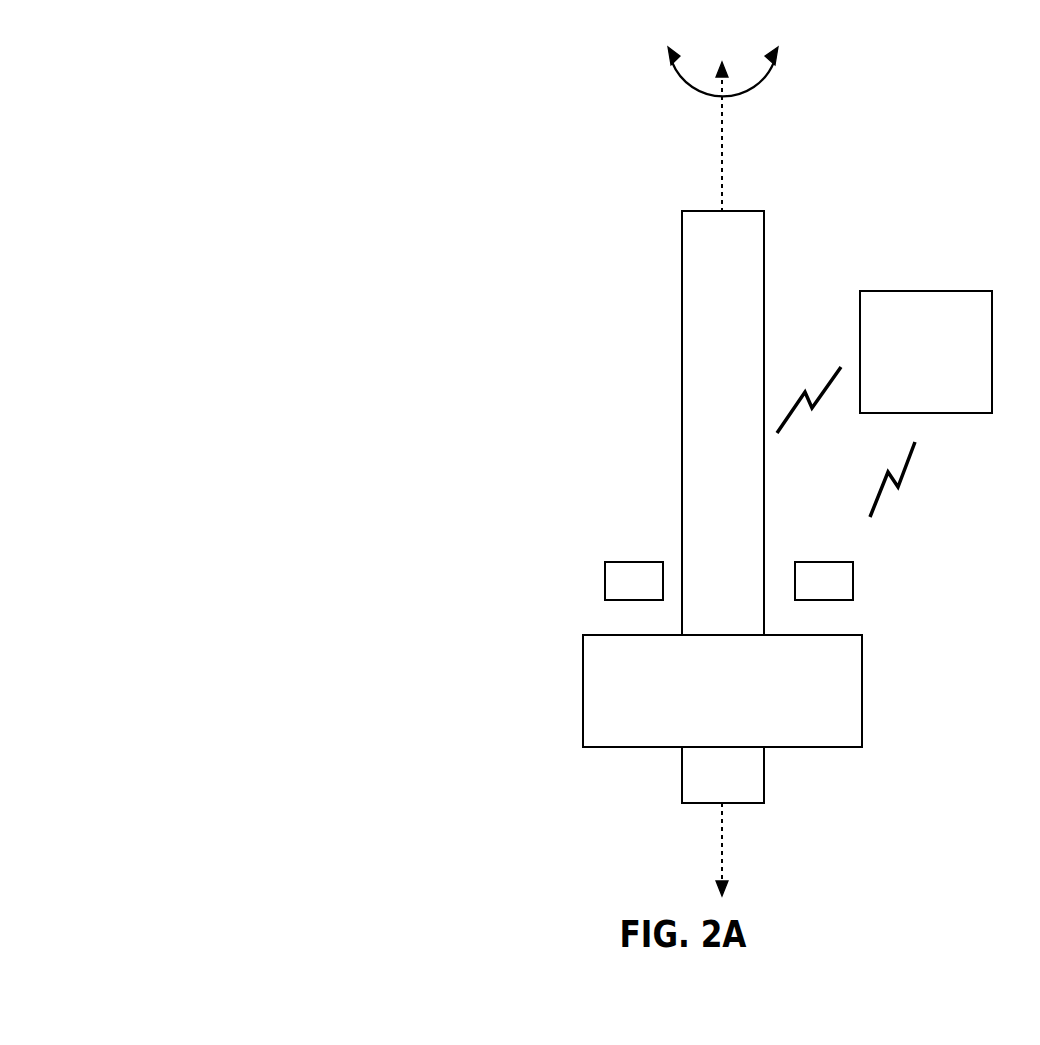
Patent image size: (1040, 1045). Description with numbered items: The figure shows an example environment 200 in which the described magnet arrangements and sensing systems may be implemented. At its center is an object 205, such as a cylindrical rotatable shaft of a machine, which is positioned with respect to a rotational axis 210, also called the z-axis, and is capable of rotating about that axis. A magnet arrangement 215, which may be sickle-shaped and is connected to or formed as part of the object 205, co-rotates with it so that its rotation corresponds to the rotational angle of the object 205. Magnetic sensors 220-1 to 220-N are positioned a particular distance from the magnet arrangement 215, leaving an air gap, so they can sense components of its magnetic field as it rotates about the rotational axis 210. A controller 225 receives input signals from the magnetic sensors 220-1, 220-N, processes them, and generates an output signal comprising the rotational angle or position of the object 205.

The environment 200 is at (138, 56).
The object 205 is at (682, 211).
The rotational axis 210 is at (727, 135).
The magnet arrangement 215 is at (583, 688).
The magnetic sensor 220-1 is at (605, 580).
The magnetic sensor 220-N is at (853, 582).
The controller 225 is at (907, 381).